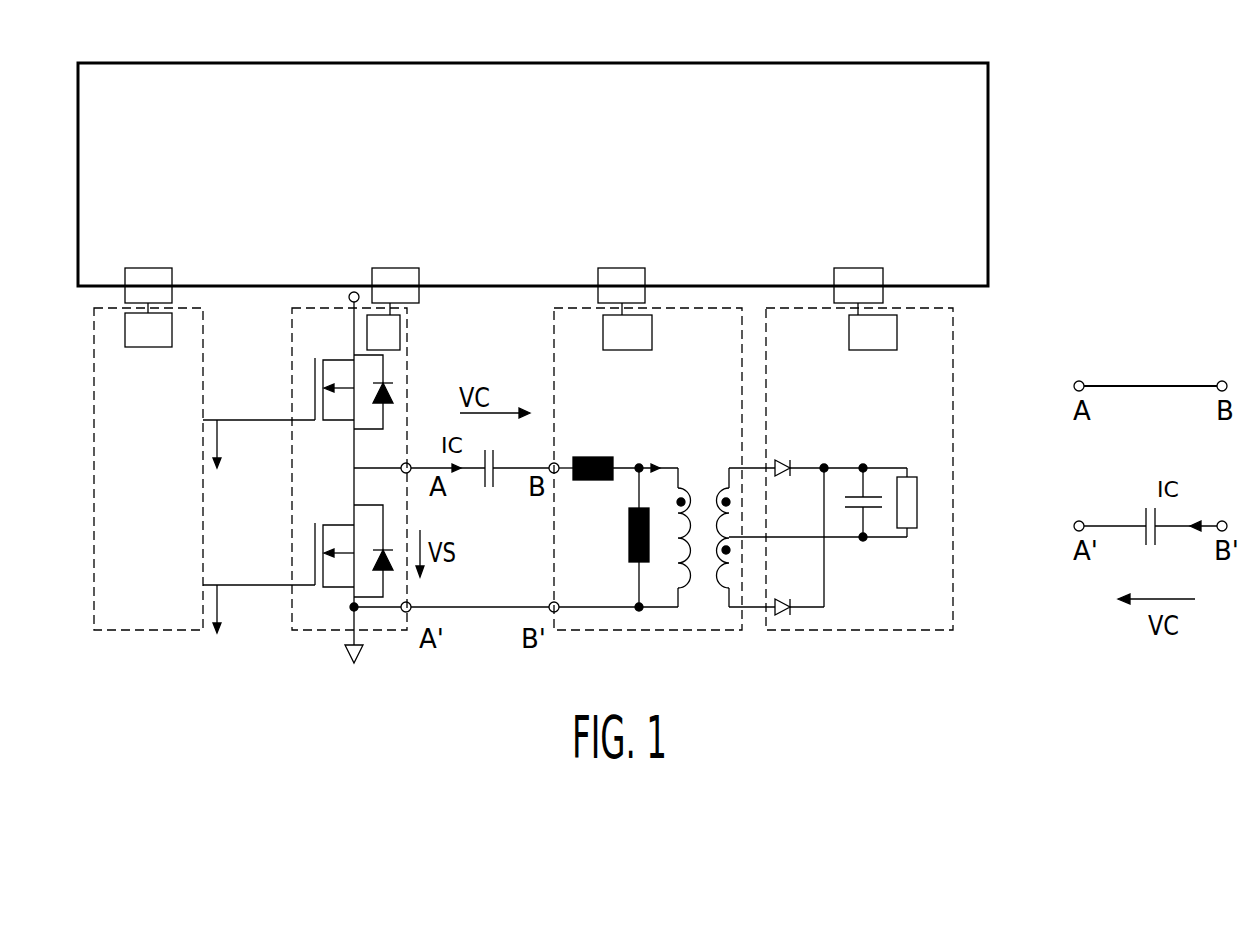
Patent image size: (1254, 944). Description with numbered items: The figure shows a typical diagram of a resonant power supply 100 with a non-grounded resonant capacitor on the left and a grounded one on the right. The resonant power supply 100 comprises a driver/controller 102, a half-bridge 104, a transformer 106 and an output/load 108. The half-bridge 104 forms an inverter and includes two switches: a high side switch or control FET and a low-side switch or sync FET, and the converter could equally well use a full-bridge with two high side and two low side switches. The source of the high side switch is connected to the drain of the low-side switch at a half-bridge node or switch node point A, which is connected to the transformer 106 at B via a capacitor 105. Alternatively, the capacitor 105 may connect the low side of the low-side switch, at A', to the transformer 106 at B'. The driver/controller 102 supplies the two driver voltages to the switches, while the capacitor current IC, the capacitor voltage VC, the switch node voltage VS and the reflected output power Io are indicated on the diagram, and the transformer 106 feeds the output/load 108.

The resonant power supply 100 is at (732, 213).
The driver/controller 102 is at (155, 380).
The half-bridge 104 is at (388, 335).
The capacitor 105 is at (497, 483).
The transformer 106 is at (607, 378).
The output/load 108 is at (845, 358).